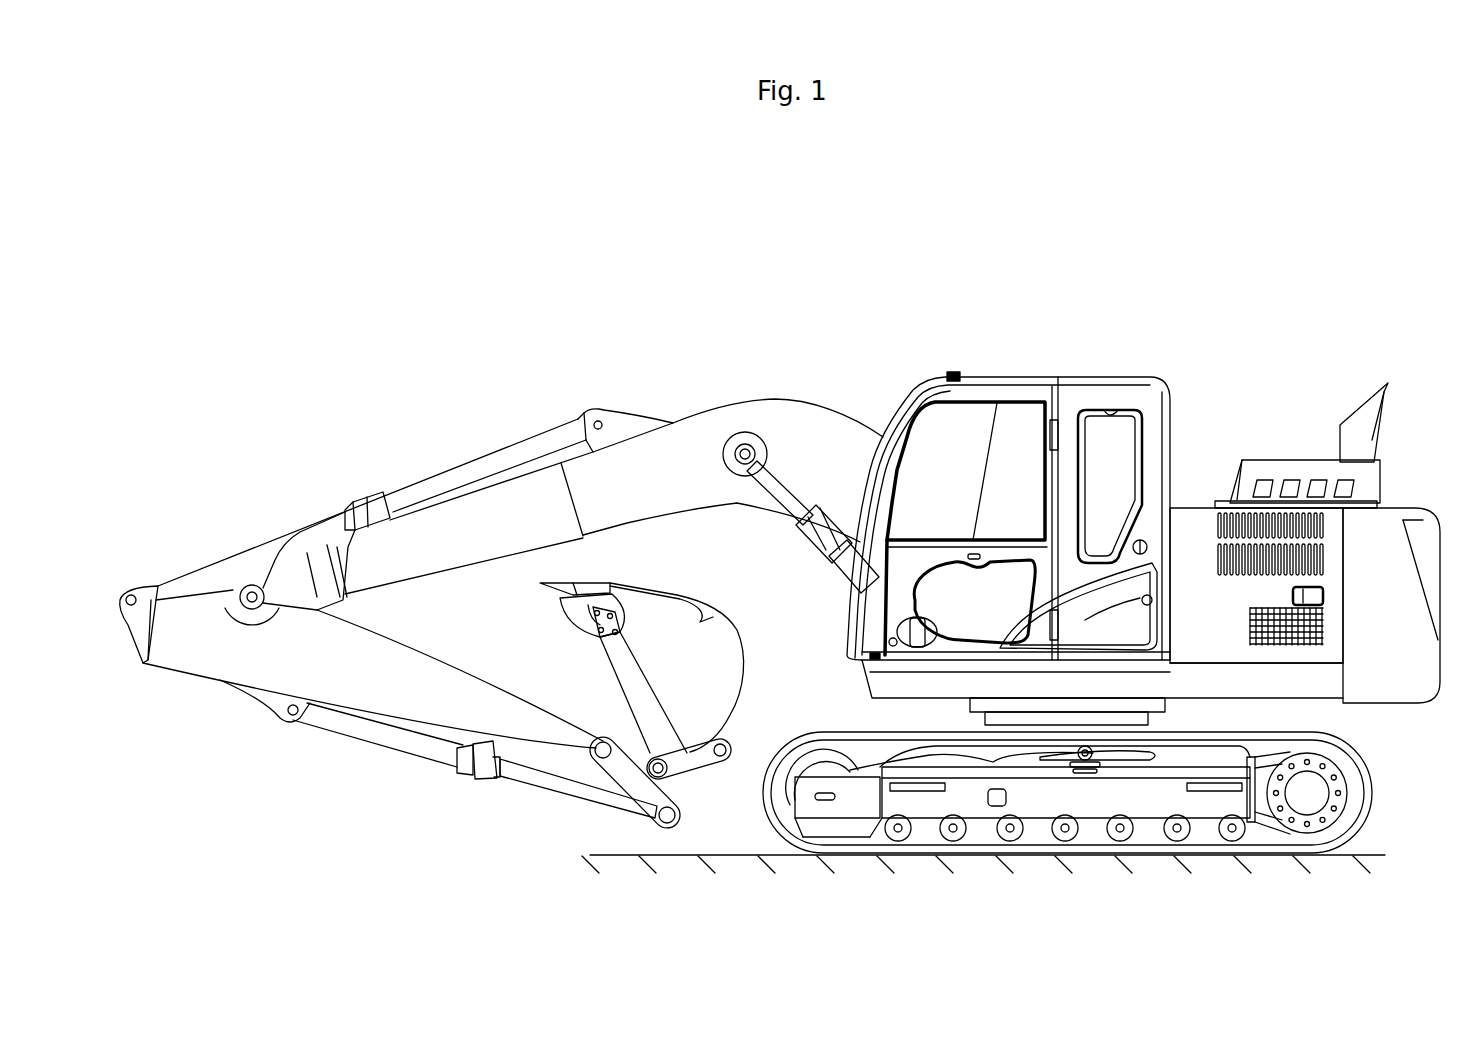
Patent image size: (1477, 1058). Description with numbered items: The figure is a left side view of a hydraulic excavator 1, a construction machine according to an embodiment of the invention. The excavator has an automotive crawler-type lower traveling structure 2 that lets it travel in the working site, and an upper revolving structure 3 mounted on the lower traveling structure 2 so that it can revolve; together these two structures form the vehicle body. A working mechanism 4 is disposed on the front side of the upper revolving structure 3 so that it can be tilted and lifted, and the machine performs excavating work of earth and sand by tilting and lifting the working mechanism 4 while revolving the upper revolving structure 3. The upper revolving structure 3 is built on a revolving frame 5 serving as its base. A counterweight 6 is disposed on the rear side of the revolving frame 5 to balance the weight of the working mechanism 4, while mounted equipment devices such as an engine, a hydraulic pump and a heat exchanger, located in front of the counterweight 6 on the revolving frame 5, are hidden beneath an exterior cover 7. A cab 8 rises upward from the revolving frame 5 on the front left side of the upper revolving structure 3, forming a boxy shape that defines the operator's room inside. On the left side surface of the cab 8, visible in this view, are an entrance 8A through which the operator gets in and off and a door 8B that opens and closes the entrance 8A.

The hydraulic excavator 1 is at (871, 345).
The lower traveling structure 2 is at (1033, 793).
The upper revolving structure 3 is at (1267, 442).
The working mechanism 4 is at (640, 472).
The revolving frame 5 is at (905, 678).
The counterweight 6 is at (1390, 578).
The exterior cover 7 is at (1201, 555).
The cab 8 is at (1100, 358).
The entrance 8A is at (890, 470).
The door 8B is at (930, 550).